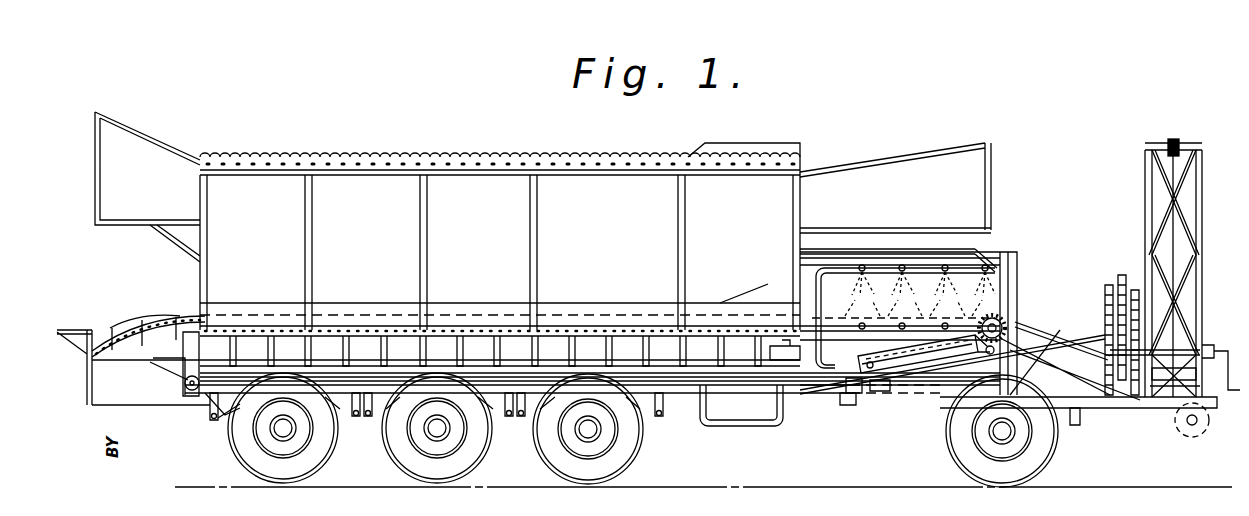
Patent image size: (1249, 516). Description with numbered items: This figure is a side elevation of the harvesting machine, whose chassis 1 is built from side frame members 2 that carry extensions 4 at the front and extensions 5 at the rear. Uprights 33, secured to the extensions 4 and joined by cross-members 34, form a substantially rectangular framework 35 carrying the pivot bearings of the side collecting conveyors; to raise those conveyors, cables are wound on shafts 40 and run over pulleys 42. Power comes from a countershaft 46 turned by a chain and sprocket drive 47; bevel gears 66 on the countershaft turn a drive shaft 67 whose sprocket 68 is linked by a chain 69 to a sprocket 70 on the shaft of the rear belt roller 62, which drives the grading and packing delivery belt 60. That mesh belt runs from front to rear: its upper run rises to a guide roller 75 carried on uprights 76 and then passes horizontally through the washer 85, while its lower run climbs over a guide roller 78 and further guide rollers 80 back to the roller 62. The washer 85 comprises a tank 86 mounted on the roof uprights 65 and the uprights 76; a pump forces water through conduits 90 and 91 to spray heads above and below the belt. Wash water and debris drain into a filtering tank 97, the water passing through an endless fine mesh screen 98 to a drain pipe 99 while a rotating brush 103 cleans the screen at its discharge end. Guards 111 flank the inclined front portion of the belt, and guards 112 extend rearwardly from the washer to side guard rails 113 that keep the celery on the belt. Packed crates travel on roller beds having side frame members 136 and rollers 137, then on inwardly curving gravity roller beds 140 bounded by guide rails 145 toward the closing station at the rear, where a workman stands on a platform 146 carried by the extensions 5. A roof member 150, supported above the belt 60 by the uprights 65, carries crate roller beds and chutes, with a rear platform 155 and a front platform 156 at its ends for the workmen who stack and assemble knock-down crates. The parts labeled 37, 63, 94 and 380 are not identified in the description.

The chassis 1 is at (368, 441).
The side frame members 2 is at (532, 428).
The front extensions 4 is at (1104, 409).
The rear extensions 5 is at (146, 400).
The uprights 33 is at (1145, 233).
The cross-members 34 is at (1173, 207).
The framework 35 is at (1145, 163).
The crank 37 is at (1190, 366).
The shafts 40 is at (1160, 350).
The pulleys 42 is at (1186, 135).
The countershaft 46 is at (213, 425).
The chain and sprocket drive 47 is at (852, 406).
The grading and packing delivery conveyor 60 is at (469, 315).
The rear belt roller 62 is at (184, 330).
The caster wheel 63 is at (1188, 425).
The roof uprights 65 is at (207, 246).
The bevel gears 66 is at (206, 400).
The drive shaft 67 is at (190, 398).
The sprocket 68 is at (185, 393).
The chain 69 is at (690, 420).
The sprocket 70 is at (500, 346).
The guide roller 75 is at (1012, 303).
The uprights 76 is at (1017, 265).
The guide roller 78 is at (1040, 370).
The guide rollers 80 is at (390, 300).
The washer 85 is at (975, 258).
The washer tank 86 is at (800, 283).
The conduit 90 is at (815, 268).
The conduit 91 is at (846, 318).
The valve box 94 is at (770, 352).
The filtering tank 97 is at (847, 385).
The fine mesh screen 98 is at (868, 362).
The drain pipe 99 is at (1150, 409).
The rotating brush 103 is at (1084, 348).
The guards 111 is at (1054, 328).
The guards 112 is at (769, 300).
The side guard rails 113 is at (349, 315).
The side frame members 136 is at (572, 318).
The rollers 137 is at (256, 330).
The curved gravity roller beds 140 is at (110, 340).
The guide rails 145 is at (118, 336).
The platform 146 is at (152, 398).
The roof member 150 is at (592, 172).
The rear platform 155 is at (152, 200).
The front platform 156 is at (870, 216).
The tower top 380 is at (1202, 164).